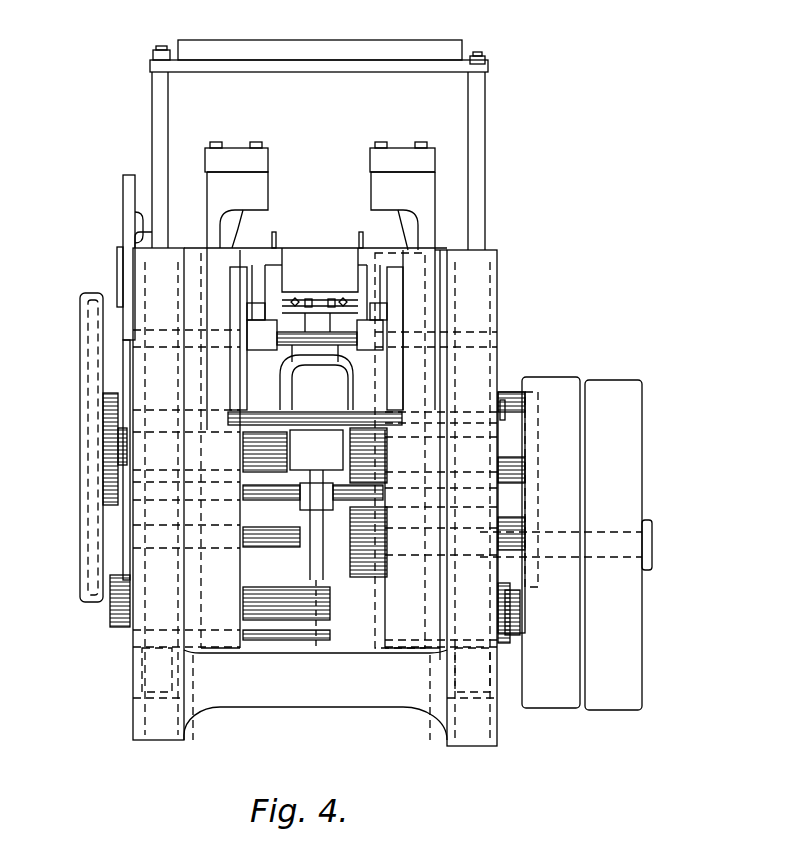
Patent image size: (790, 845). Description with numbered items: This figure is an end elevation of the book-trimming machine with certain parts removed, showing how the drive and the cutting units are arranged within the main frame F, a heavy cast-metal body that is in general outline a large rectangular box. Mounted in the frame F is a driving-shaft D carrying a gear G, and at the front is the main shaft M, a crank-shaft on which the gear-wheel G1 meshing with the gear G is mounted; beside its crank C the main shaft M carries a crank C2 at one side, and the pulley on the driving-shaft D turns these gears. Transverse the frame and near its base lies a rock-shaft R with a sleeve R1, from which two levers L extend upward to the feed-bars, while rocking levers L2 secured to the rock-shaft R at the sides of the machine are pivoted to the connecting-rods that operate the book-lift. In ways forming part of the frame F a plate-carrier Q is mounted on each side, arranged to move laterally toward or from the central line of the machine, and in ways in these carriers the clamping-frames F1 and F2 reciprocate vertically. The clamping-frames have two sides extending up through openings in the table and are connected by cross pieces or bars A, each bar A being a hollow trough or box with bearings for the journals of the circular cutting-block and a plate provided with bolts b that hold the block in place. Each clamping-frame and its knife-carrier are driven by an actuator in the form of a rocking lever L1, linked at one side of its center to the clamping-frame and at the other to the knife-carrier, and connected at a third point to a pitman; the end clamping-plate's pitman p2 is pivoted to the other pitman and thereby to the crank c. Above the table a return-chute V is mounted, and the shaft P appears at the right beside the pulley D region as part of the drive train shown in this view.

The return-chute V is at (308, 50).
The bolts b is at (217, 148).
The cross piece or bar A is at (320, 289).
The main frame F is at (315, 409).
The clamping-frame F1 is at (208, 215).
The clamping-frame F2 is at (425, 225).
The pitman p2 is at (277, 236).
The crank c is at (268, 258).
The levers L is at (315, 378).
The plate-carrier Q is at (320, 455).
The main shaft M is at (255, 447).
The rocking lever L1 is at (286, 510).
The sleeve R1 is at (255, 600).
The gear-wheel G1 is at (383, 478).
The gear G is at (378, 548).
The shaft column P is at (527, 467).
The crank C2 is at (512, 392).
The rock-shaft R is at (518, 620).
The driving-shaft D is at (654, 548).
The crank C is at (85, 395).
The rocking lever L2 is at (125, 535).